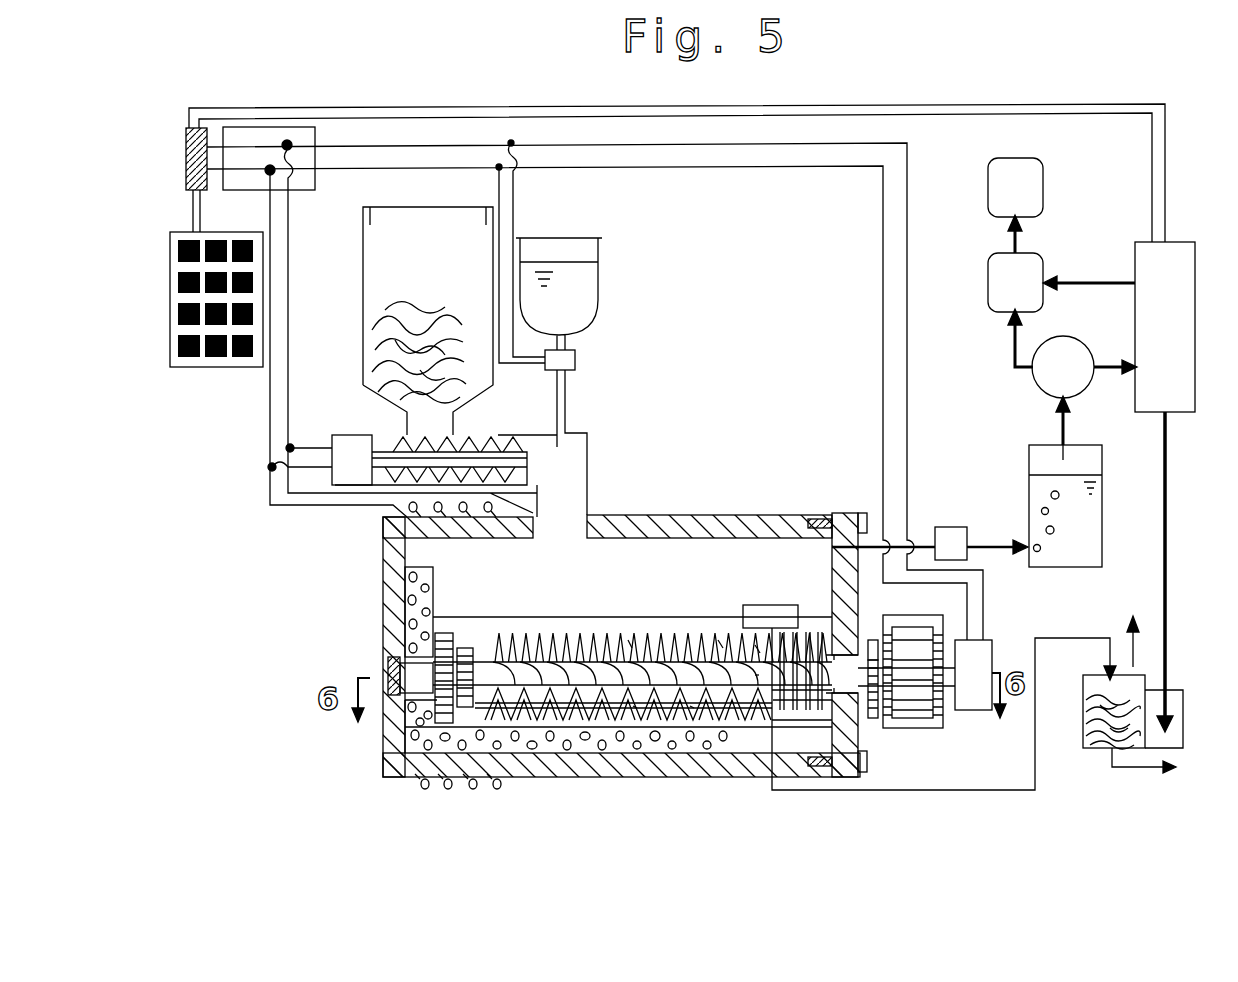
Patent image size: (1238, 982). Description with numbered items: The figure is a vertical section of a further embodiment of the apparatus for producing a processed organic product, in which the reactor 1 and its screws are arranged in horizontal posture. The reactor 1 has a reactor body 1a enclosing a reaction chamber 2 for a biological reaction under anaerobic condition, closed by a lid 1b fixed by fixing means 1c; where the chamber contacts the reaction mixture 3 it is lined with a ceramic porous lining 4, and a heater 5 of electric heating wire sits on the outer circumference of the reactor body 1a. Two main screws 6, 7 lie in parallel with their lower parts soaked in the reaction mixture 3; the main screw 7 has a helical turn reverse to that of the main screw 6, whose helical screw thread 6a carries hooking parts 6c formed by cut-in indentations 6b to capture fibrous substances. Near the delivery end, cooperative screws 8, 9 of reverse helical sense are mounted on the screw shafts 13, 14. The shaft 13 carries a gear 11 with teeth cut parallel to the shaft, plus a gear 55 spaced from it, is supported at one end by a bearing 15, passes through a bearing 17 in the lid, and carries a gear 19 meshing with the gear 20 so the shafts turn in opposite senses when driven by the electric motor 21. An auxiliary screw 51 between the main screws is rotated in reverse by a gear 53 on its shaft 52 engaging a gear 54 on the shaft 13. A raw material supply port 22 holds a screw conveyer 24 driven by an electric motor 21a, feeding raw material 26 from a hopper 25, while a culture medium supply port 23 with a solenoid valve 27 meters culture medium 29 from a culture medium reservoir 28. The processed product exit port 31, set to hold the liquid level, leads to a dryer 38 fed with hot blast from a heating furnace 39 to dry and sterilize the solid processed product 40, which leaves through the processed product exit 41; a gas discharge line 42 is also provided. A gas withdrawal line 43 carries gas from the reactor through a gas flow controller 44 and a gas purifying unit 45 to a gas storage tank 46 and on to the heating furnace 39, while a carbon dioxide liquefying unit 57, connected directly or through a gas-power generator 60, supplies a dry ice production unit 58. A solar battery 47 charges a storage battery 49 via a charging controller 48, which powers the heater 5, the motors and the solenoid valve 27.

The reactor 1 is at (714, 492).
The reactor body 1a is at (383, 598).
The lid 1b is at (850, 556).
The fixing means 1c is at (847, 517).
The reaction chamber 2 is at (632, 557).
The reaction mixture 3 is at (562, 625).
The porous lining 4 is at (733, 740).
The heater 5 is at (417, 790).
The main screw 6 is at (690, 640).
The helical screw thread 6a is at (630, 640).
The cut-in indentations 6b is at (637, 707).
The hooking parts 6c is at (692, 707).
The main screw 7 is at (720, 640).
The cooperative screw 8 is at (782, 713).
The cooperative screw 9 is at (817, 640).
The gear 11 is at (443, 633).
The screw shaft 13 is at (760, 647).
The screw shaft 14 is at (757, 675).
The bearing 15 is at (388, 657).
The bearing 17 is at (853, 657).
The gear 19 is at (924, 722).
The gear 20 is at (905, 610).
The electric motor 21 is at (973, 710).
The electric motor 21a is at (332, 485).
The raw material supply port 22 is at (488, 445).
The culture medium supply port 23 is at (557, 389).
The screw conveyer 24 is at (397, 443).
The hopper 25 is at (383, 243).
The raw material 26 is at (383, 307).
The solenoid valve 27 is at (575, 364).
The culture medium reservoir 28 is at (597, 286).
The culture medium 29 is at (557, 290).
The processed product exit port 31 is at (777, 623).
The dryer 38 is at (1100, 673).
The heating furnace 39 is at (1175, 700).
The solid processed product 40 is at (1100, 697).
The processed product exit 41 is at (1142, 767).
The gas discharge line 42 is at (1127, 650).
The gas withdrawal line 43 is at (880, 527).
The gas flow controller 44 is at (949, 527).
The gas purifying unit 45 is at (1097, 517).
The gas storage tank 46 is at (1032, 387).
The solar battery 47 is at (219, 367).
The charging controller 48 is at (207, 190).
The storage battery 49 is at (303, 180).
The auxiliary screw 51 is at (567, 700).
The shaft 52 is at (605, 712).
The gear 53 is at (870, 720).
The gear 54 is at (872, 660).
The gear 55 is at (465, 648).
The carbon dioxide liquefying unit 57 is at (997, 273).
The dry ice production unit 58 is at (997, 185).
The gas-power generator 60 is at (1135, 252).